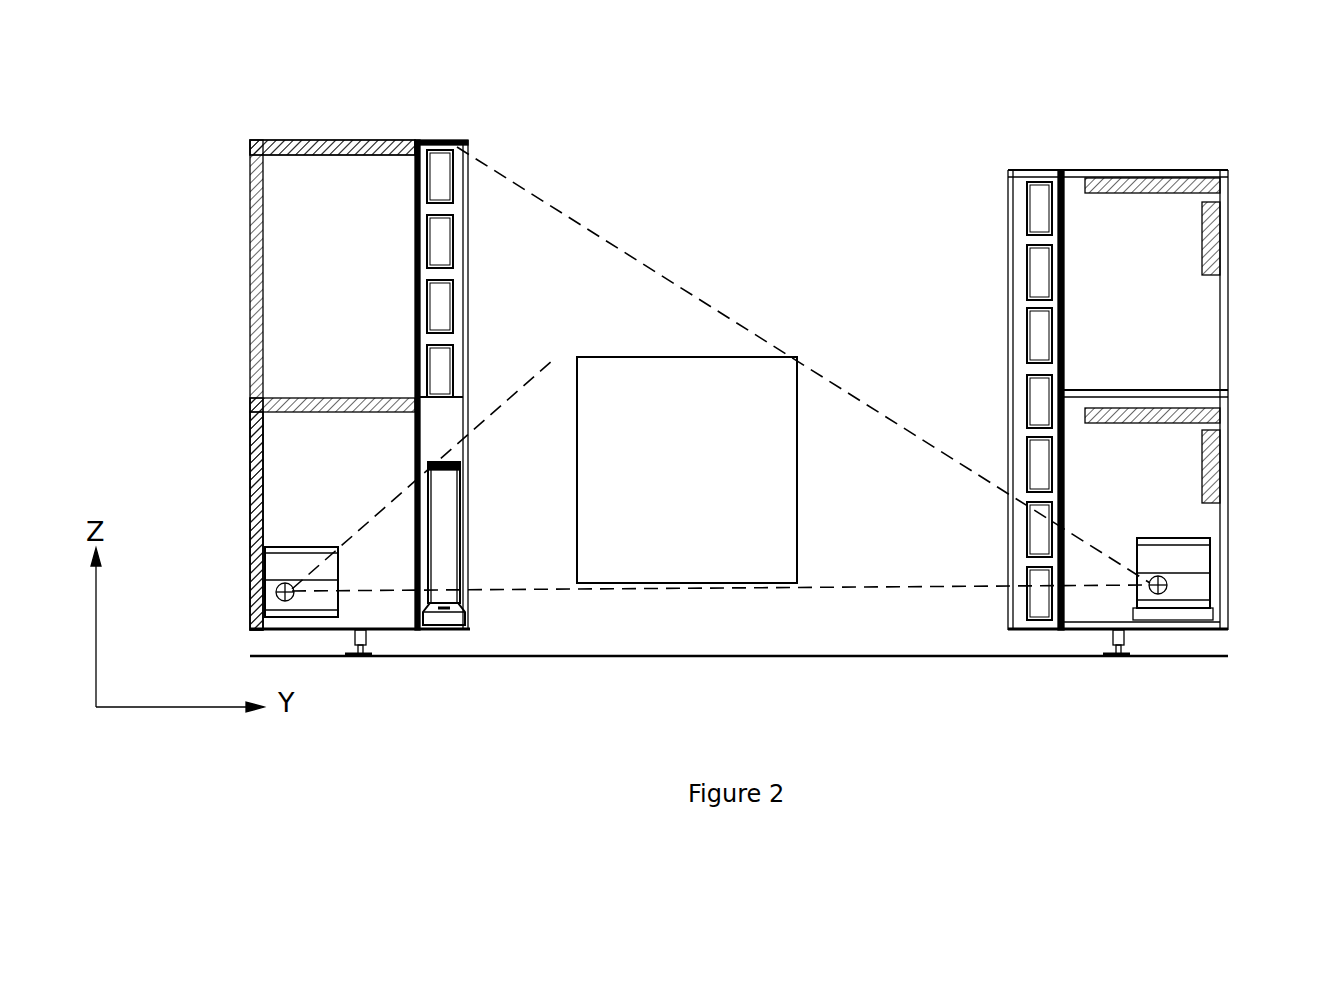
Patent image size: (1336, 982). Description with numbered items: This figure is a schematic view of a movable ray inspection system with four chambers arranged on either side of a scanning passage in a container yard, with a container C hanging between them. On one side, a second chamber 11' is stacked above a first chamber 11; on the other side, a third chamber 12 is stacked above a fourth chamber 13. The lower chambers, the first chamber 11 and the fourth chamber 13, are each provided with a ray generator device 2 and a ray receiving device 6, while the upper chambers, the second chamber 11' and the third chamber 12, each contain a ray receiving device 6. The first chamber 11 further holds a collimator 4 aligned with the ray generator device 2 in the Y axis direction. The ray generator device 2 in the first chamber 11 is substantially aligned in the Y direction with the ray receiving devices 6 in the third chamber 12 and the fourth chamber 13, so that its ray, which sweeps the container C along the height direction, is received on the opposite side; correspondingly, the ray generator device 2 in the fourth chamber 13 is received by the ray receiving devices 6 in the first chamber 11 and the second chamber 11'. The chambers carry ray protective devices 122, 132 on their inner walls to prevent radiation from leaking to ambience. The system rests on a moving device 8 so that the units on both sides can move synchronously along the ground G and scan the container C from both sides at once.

The ray generator device 2 is at (285, 592).
The collimator 4 is at (445, 598).
The ray receiving device 6 is at (443, 188).
The moving device 8 is at (370, 655).
The first chamber 11 is at (1165, 509).
The second chamber 11' is at (1201, 400).
The third chamber 12 is at (237, 230).
The fourth chamber 13 is at (232, 487).
The ray protective device 122 is at (292, 138).
The ray protective device 132 is at (252, 525).
The container C is at (658, 407).
The ground G is at (438, 657).